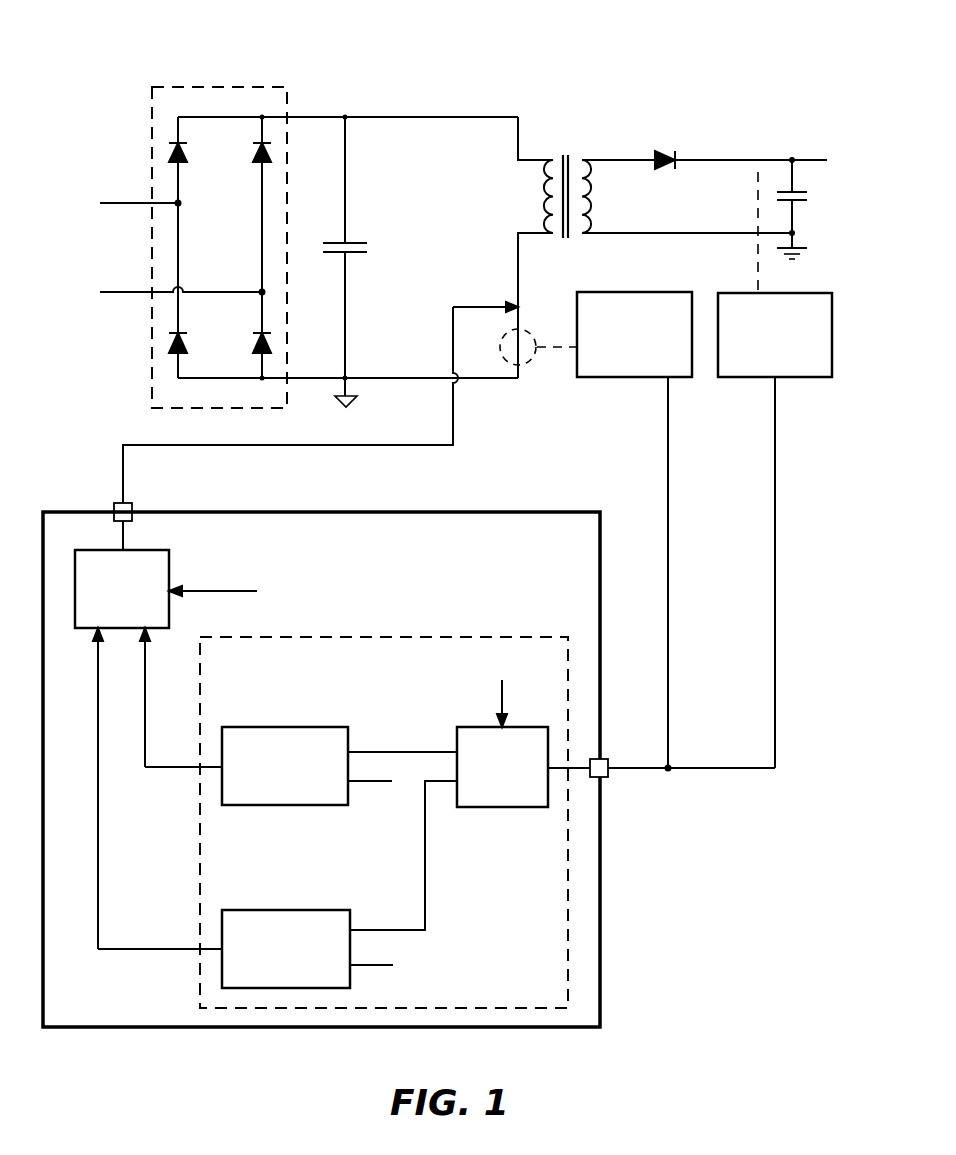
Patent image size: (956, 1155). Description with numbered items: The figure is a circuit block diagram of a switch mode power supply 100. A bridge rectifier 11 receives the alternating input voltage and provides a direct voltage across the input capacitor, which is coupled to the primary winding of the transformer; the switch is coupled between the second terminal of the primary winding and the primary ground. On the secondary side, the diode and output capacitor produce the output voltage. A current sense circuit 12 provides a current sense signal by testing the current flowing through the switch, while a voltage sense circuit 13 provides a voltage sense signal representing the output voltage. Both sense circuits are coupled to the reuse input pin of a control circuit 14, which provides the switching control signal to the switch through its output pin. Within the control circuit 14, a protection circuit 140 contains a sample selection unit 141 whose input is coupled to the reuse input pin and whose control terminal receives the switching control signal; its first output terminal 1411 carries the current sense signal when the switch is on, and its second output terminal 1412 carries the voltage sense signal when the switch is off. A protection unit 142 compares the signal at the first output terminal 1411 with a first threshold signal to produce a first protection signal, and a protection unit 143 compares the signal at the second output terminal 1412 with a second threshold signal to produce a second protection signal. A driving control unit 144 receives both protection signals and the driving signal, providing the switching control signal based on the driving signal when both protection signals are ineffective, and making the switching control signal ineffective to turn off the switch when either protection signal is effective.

The switch mode power supply 100 is at (742, 58).
The bridge rectifier 11 is at (153, 355).
The current sense circuit 12 is at (590, 378).
The voltage sense circuit 13 is at (795, 378).
The control circuit 14 is at (75, 511).
The protection circuit 140 is at (522, 637).
The sample selection unit 141 is at (502, 767).
The protection unit 142 is at (284, 727).
The protection unit 143 is at (287, 910).
The driving control unit 144 is at (122, 589).
The first output terminal 1411 is at (422, 752).
The second output terminal 1412 is at (425, 822).